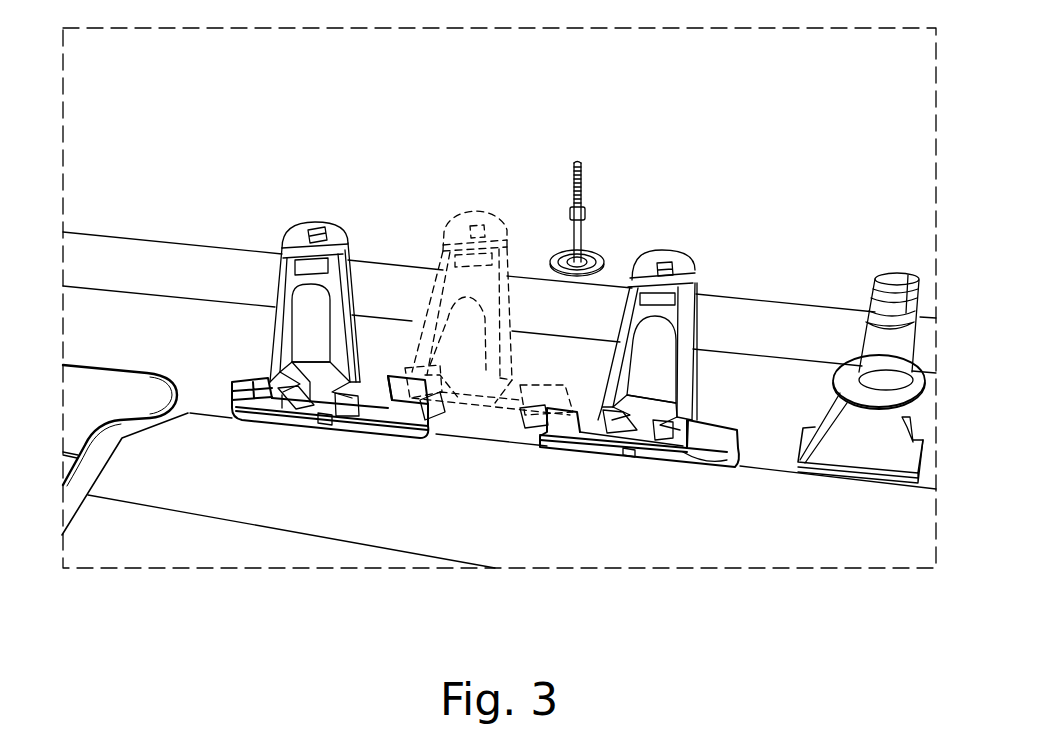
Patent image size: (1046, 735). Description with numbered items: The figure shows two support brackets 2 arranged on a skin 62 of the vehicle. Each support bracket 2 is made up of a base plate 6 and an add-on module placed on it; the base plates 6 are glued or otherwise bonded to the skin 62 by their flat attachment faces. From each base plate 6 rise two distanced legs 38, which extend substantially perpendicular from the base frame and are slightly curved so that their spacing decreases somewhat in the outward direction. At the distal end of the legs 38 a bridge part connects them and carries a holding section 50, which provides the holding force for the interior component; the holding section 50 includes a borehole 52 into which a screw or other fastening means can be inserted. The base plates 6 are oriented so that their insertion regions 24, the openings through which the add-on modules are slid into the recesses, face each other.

The support bracket 2 is at (314, 191).
The base plate 6 is at (257, 423).
The insertion region 24 is at (431, 416).
The legs 38 is at (348, 343).
The holding section 50 is at (682, 270).
The borehole 52 is at (317, 230).
The skin 62 is at (213, 340).